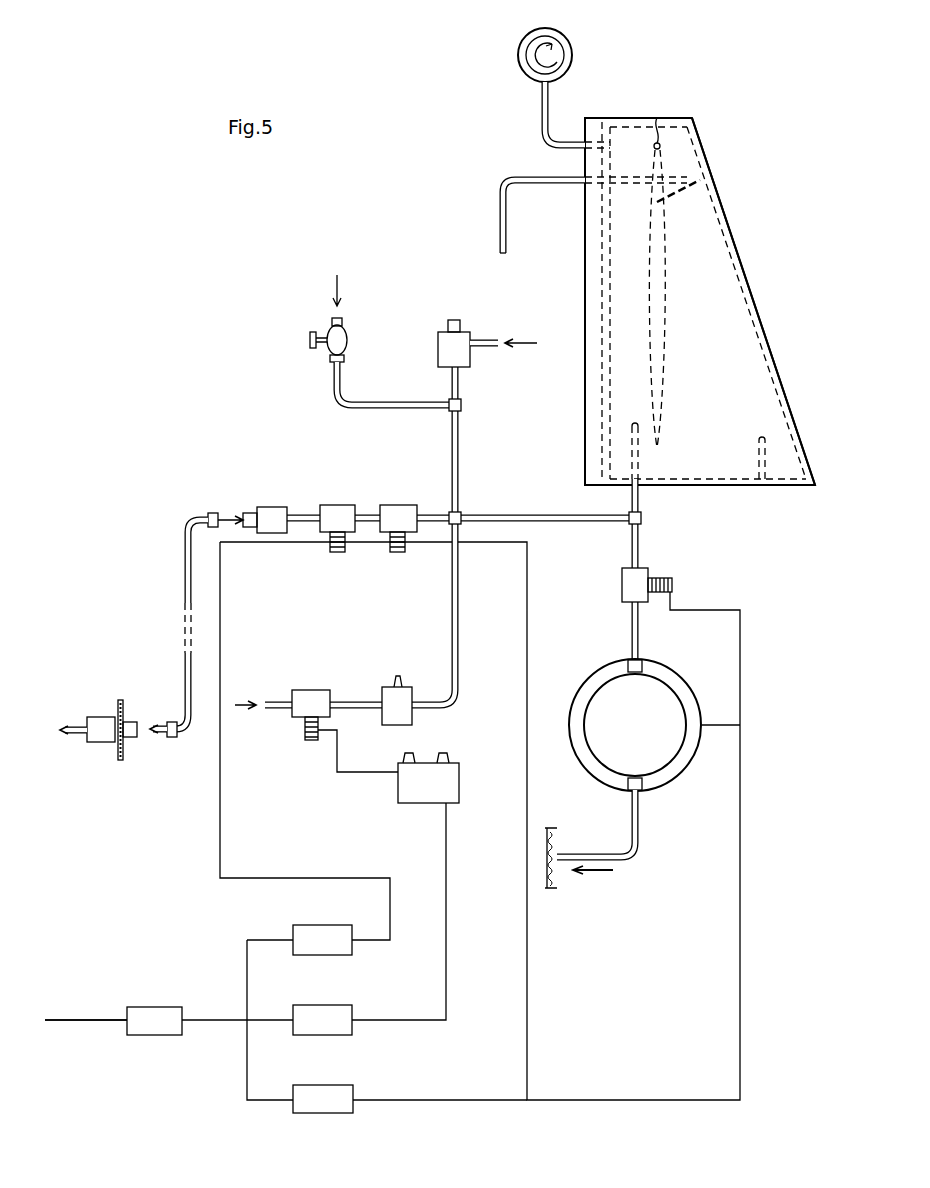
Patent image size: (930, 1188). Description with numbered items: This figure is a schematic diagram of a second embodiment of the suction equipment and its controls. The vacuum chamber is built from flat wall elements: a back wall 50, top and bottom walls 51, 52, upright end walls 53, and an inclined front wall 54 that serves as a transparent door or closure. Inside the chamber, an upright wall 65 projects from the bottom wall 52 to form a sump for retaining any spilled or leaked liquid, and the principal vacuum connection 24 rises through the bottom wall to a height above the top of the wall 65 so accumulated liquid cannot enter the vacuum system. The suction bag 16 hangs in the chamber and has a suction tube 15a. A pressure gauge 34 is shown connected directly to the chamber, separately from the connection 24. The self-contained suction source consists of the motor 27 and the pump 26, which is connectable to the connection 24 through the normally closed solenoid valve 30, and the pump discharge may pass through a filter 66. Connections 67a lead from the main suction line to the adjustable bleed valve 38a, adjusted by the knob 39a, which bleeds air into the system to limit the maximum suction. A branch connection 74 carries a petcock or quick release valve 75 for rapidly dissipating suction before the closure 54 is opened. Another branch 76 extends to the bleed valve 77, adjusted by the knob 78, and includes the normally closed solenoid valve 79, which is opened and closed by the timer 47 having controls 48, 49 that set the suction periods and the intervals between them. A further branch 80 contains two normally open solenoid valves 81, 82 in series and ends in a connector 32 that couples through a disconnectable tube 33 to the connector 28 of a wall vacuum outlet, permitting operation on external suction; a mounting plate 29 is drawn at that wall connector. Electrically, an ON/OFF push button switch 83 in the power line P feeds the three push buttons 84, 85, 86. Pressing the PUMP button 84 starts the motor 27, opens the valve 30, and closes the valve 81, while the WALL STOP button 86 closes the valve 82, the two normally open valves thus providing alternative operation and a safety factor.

The suction tube 15a is at (498, 215).
The bag 16 is at (668, 238).
The vacuum connection 24 is at (640, 498).
The pump 26 is at (595, 762).
The motor 27 is at (677, 780).
The connector of wall vacuum outlet 28 is at (103, 717).
The mounting plate 29 is at (123, 753).
The solenoid valve 30 is at (648, 572).
The connector 32 is at (268, 507).
The disconnectable tube 33 is at (185, 570).
The pressure gauge 34 is at (573, 54).
The adjustable bleed valve 38a is at (472, 360).
The knob 39a is at (448, 322).
The timer 47 is at (460, 783).
The control 48 is at (410, 755).
The control 49 is at (448, 757).
The back wall 50 is at (583, 280).
The top wall 51 is at (625, 118).
The bottom wall 52 is at (727, 488).
The end wall 53 is at (716, 331).
The inclined front wall 54 is at (748, 273).
The upright wall 65 is at (765, 456).
The filter 66 is at (556, 870).
The connections 67a is at (462, 482).
The branch connection 74 is at (378, 408).
The quick release valve 75 is at (345, 340).
The branch 76 is at (452, 600).
The bleed valve 77 is at (382, 693).
The knob 78 is at (400, 678).
The solenoid valve 79 is at (310, 690).
The branch 80 is at (430, 513).
The solenoid operated valve 81 is at (385, 505).
The solenoid operated valve 82 is at (330, 505).
The ON/OFF push button switch 83 is at (137, 1027).
The push button 84 is at (307, 1100).
The push button 85 is at (332, 1027).
The WALL STOP push button switch 86 is at (342, 947).
The power line P is at (88, 1023).